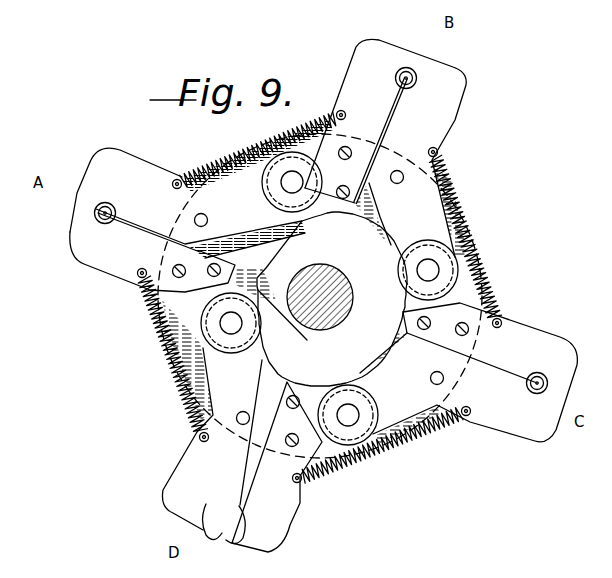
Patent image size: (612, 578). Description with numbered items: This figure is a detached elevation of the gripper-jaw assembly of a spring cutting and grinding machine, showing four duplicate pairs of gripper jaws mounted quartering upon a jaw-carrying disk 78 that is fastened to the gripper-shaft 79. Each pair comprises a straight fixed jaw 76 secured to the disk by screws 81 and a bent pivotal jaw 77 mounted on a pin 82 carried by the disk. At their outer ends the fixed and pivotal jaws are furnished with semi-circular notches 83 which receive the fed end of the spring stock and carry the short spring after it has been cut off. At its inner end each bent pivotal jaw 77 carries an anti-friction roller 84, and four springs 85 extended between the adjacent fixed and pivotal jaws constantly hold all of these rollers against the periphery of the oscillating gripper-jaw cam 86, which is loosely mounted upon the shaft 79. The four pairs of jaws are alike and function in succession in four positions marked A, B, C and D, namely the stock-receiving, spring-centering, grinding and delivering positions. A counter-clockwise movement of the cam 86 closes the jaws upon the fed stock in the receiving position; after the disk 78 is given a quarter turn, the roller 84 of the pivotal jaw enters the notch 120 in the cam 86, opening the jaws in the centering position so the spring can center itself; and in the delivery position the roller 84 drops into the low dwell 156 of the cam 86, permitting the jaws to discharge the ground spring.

The fixed jaw 76 is at (143, 244).
The pivotal jaw 77 is at (201, 186).
The jaw-carrying disk 78 is at (258, 238).
The gripper-shaft 79 is at (342, 287).
The screws 81 is at (208, 270).
The pins 82 is at (208, 220).
The semi-circular notches 83 is at (90, 217).
The anti-friction roller 84 is at (293, 153).
The springs 85 is at (262, 146).
The oscillating gripper-jaw cam 86 is at (373, 233).
The notch 120 is at (403, 287).
The low dwell 156 is at (308, 339).